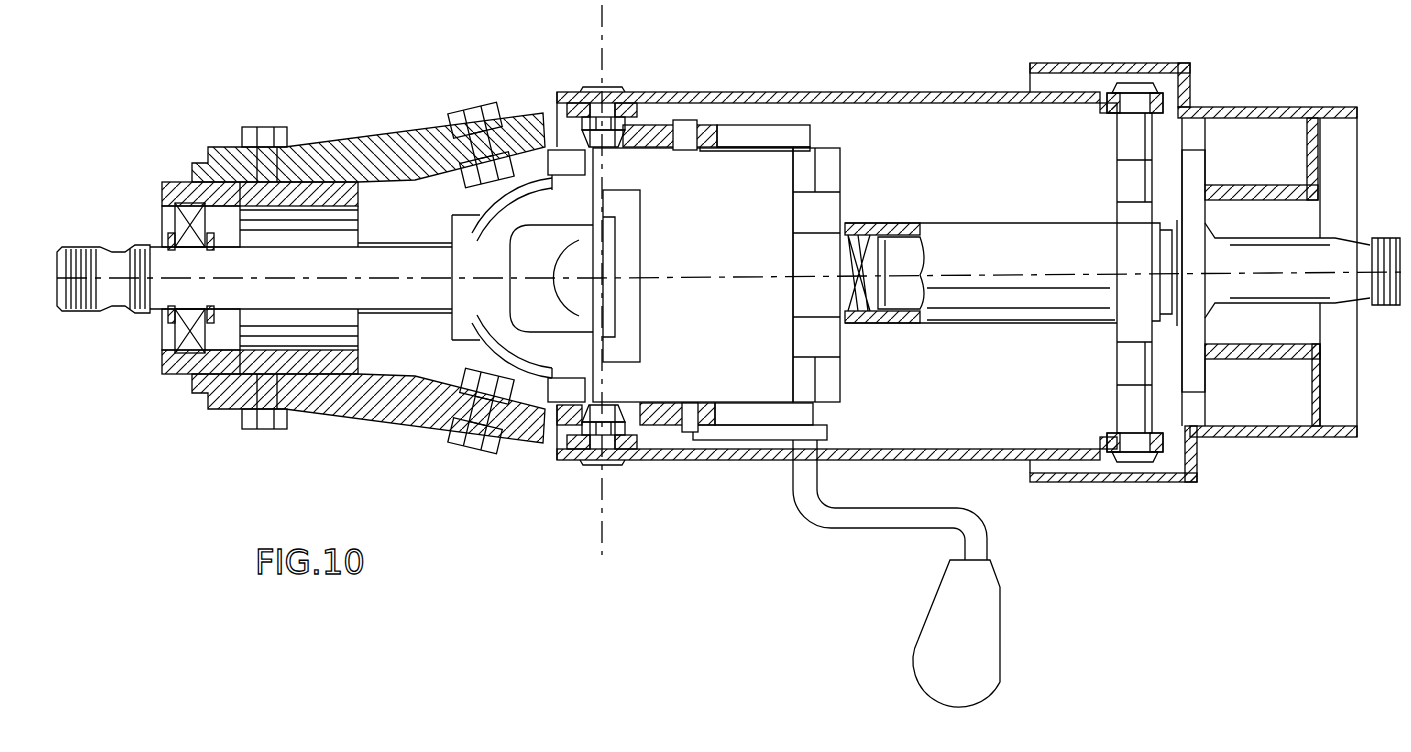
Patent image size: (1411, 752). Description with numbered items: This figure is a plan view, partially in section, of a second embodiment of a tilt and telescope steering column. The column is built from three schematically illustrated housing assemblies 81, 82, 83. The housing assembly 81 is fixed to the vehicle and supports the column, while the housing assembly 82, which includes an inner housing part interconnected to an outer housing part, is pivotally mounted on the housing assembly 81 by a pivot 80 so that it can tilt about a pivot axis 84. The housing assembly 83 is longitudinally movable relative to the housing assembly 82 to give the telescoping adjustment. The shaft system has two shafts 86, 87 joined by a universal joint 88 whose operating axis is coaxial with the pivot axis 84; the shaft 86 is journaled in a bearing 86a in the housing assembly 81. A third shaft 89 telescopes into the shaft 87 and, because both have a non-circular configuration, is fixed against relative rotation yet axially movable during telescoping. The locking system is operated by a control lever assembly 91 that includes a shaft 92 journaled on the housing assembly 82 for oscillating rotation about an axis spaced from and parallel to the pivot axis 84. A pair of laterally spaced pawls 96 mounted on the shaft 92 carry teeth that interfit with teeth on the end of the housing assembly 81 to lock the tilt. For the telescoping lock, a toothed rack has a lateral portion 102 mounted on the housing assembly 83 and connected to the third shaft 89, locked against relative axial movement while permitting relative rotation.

The pivot 80 is at (584, 76).
The housing assembly 81 is at (205, 380).
The housing assembly 82 is at (858, 92).
The housing assembly 83 is at (1260, 433).
The pivot axis 84 is at (618, 45).
The shaft 86 is at (416, 258).
The bearing 86a is at (192, 208).
The shaft 87 is at (888, 328).
The universal joint 88 is at (530, 292).
The third shaft 89 is at (893, 257).
The control lever assembly 91 is at (810, 521).
The shaft 92 is at (758, 440).
The pawls 96 is at (752, 130).
The lateral portion 102 is at (1200, 152).